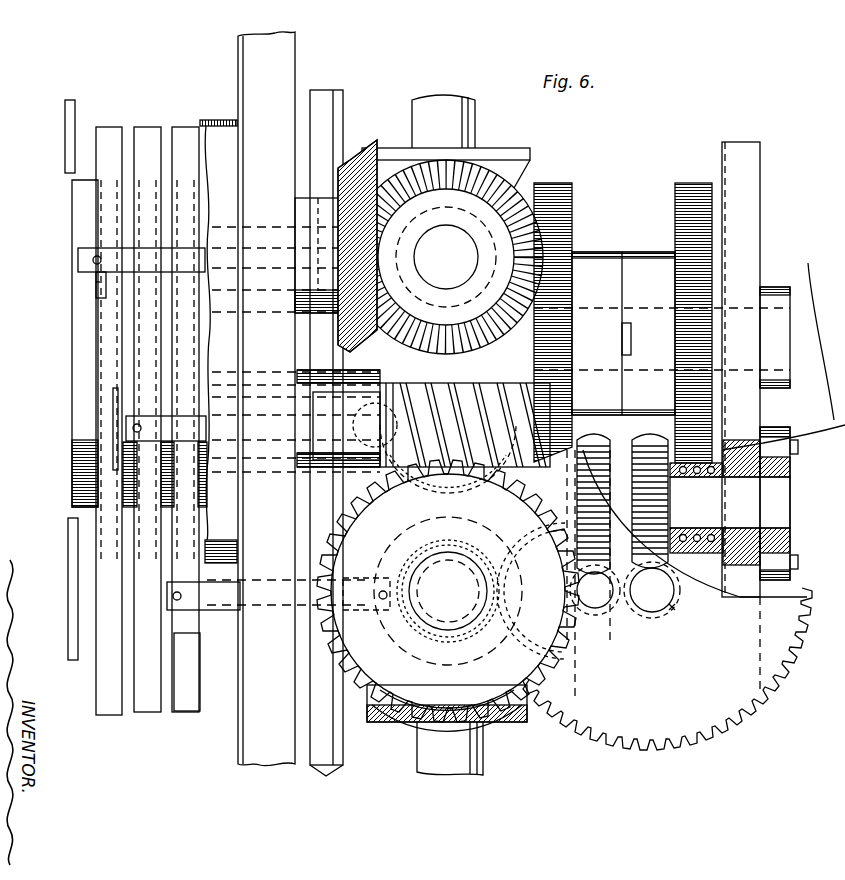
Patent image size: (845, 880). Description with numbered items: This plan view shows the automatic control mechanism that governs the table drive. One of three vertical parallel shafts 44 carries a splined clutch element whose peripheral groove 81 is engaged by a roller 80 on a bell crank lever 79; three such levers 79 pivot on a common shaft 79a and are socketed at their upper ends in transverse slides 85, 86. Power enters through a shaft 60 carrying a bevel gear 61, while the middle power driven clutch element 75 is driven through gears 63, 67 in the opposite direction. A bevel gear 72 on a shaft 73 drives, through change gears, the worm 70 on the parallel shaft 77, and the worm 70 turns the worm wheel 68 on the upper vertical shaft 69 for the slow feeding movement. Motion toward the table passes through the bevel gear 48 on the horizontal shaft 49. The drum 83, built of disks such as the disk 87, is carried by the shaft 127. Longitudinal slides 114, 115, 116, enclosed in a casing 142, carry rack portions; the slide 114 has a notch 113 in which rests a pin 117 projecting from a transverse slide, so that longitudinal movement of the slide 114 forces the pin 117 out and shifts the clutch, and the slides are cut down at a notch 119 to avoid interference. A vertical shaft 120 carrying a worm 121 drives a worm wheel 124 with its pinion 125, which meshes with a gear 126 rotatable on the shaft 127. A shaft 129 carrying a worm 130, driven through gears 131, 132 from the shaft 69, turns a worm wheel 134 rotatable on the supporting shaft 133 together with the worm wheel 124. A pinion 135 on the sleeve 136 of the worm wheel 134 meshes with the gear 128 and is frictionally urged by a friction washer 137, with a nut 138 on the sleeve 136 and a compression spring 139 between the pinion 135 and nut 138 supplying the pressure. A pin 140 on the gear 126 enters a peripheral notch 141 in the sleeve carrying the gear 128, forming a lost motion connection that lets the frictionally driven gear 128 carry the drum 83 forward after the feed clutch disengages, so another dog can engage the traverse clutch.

The vertical shaft 44 is at (456, 254).
The bevel gear 48 is at (386, 723).
The horizontal shaft 49 is at (483, 746).
The shaft 60 is at (475, 115).
The bevel gear 61 is at (395, 145).
The gear 63 is at (522, 192).
The gear 67 is at (388, 374).
The worm wheel 68 is at (340, 528).
The shaft 69 is at (448, 632).
The worm 70 is at (416, 491).
The bevel gear 72 is at (358, 176).
The shaft 73 is at (258, 236).
The power driven clutch element 75 is at (202, 120).
The shaft 77 is at (258, 400).
The bell crank lever 79 is at (343, 598).
The common shaft 79a is at (320, 684).
The roller 80 is at (420, 237).
The peripheral groove 81 is at (445, 258).
The drum 83 is at (72, 356).
The transverse slide 85 is at (126, 434).
The transverse slide 86 is at (225, 598).
The disk 87 is at (78, 262).
The notch 113 is at (98, 284).
The longitudinal slide 114 is at (114, 716).
The longitudinal slide 115 is at (150, 713).
The longitudinal slide 116 is at (188, 713).
The pin 117 is at (96, 285).
The notch 119 is at (183, 462).
The vertical shaft 120 is at (596, 610).
The worm 121 is at (585, 612).
The worm wheel 124 is at (596, 440).
The pinion 125 is at (577, 414).
The gear 126 is at (620, 353).
The shaft 127 is at (296, 330).
The gear 128 is at (675, 268).
The shaft 129 is at (652, 612).
The worm 130 is at (676, 606).
The gear 131 is at (396, 628).
The gear 132 is at (630, 748).
The supporting shaft 133 is at (790, 496).
The worm wheel 134 is at (648, 440).
The pinion 135 is at (656, 430).
The sleeve 136 is at (707, 478).
The friction washer 137 is at (680, 528).
The nut 138 is at (795, 450).
The compression spring 139 is at (735, 472).
The pin 140 is at (624, 351).
The peripheral notch 141 is at (641, 322).
The casing 142 is at (65, 147).